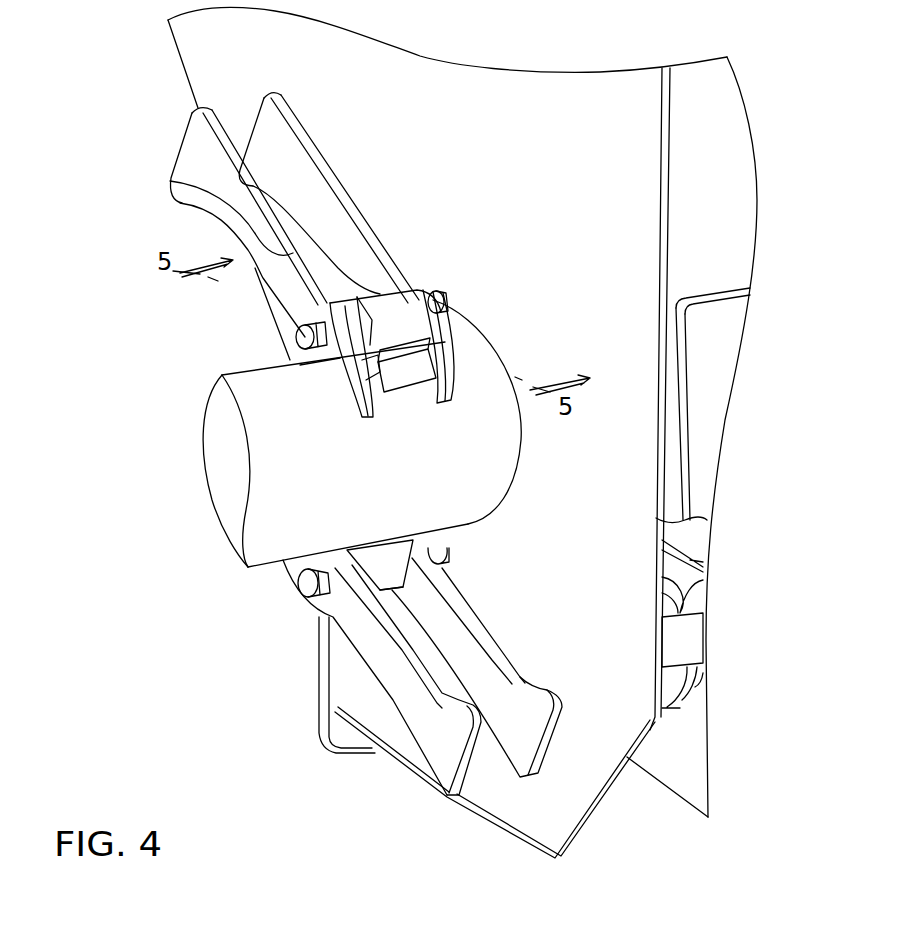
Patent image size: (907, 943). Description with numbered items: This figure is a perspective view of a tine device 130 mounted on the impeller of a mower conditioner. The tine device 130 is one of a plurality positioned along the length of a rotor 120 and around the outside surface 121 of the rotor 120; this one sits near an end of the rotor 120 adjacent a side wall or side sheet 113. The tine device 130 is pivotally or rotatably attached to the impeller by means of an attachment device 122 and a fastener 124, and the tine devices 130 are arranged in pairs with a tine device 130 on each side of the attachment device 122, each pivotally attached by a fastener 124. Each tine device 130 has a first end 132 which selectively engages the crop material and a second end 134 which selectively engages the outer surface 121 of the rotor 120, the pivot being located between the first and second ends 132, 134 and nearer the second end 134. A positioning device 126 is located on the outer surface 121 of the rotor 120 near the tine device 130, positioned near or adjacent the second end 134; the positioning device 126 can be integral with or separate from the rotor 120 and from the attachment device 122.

The side sheet 113 is at (578, 173).
The rotor 120 is at (280, 457).
The outside surface 121 is at (318, 423).
The attachment device 122 is at (383, 328).
The fastener 124 is at (304, 334).
The positioning device 126 is at (402, 385).
The tine device 130 is at (170, 181).
The first end 132 is at (280, 102).
The second end 134 is at (367, 414).